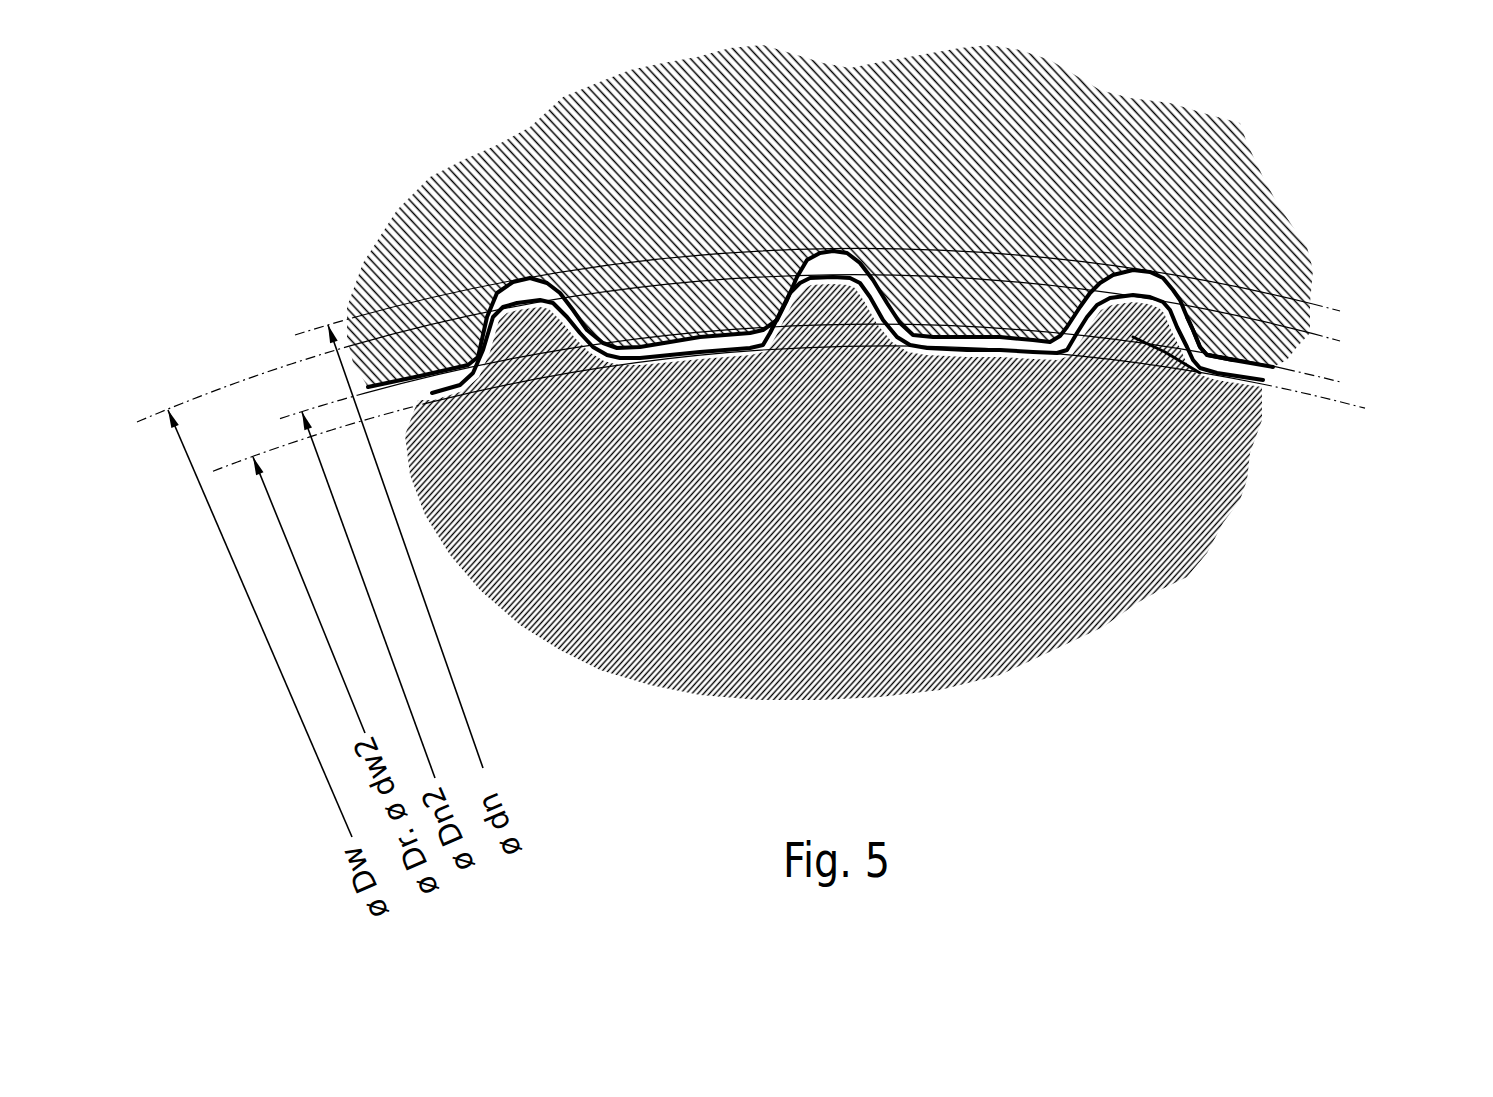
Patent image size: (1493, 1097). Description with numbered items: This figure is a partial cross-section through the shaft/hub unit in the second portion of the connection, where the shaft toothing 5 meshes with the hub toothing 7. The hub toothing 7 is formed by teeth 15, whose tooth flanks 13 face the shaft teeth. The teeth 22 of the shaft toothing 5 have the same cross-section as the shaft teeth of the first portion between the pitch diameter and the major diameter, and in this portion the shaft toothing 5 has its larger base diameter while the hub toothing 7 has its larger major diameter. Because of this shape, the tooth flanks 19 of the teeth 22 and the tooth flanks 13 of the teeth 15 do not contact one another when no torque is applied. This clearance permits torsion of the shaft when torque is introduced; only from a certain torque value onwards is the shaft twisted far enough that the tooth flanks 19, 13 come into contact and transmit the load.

The shaft toothing 5 is at (1087, 548).
The hub toothing 7 is at (1068, 192).
The tooth flanks 13 is at (1180, 300).
The teeth 15 is at (998, 295).
The tooth flanks 19 is at (1192, 342).
The teeth 22 is at (1200, 373).